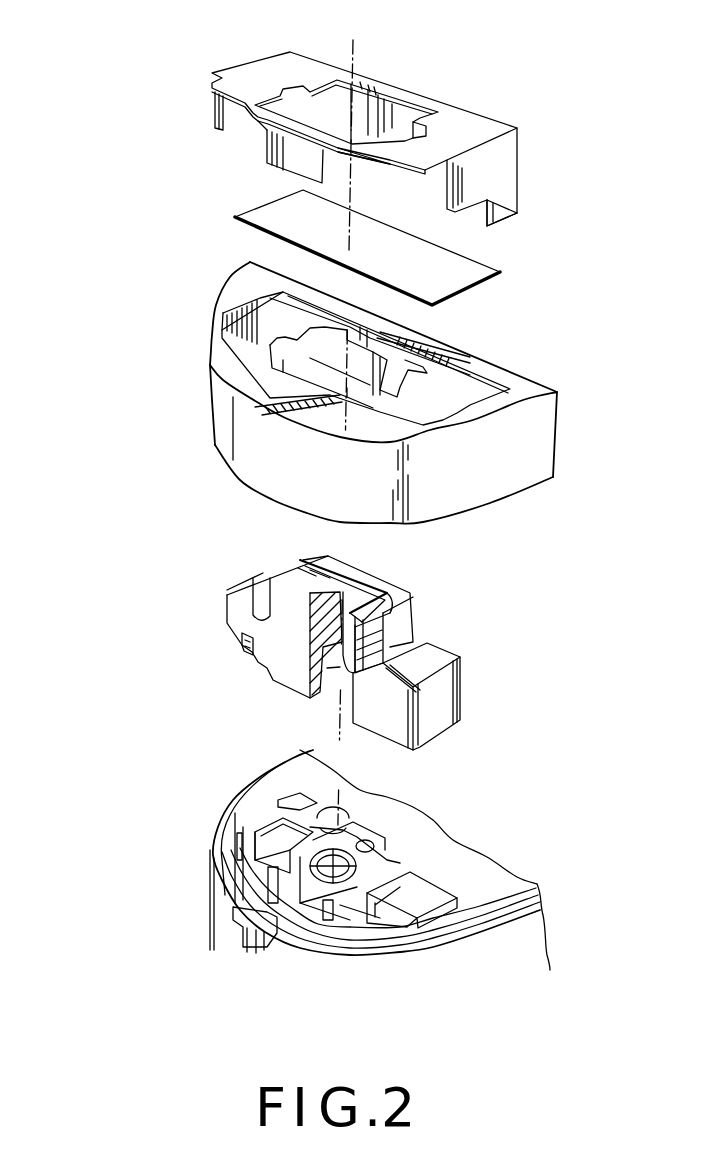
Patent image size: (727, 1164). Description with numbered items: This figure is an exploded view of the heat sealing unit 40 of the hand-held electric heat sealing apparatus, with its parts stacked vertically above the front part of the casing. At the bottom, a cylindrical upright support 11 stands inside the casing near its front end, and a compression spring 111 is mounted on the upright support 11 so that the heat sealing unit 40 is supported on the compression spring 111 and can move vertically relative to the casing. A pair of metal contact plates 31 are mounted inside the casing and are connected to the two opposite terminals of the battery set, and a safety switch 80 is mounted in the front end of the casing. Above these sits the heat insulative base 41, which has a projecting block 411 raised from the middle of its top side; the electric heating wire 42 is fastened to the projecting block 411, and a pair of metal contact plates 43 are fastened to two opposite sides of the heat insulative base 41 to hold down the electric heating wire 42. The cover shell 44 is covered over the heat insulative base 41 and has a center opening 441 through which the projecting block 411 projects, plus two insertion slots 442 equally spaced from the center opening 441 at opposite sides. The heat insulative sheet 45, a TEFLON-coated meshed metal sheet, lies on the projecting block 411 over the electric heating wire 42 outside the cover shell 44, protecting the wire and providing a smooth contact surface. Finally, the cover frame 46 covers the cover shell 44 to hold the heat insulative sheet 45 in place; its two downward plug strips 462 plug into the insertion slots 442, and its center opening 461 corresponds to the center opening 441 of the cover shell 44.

The upright support 11 is at (313, 893).
The compression spring 111 is at (347, 833).
The metal contact plates 31 is at (277, 827).
The heat sealing unit 40 is at (92, 270).
The heat insulative base 41 is at (410, 630).
The projecting block 411 is at (363, 567).
The electric heating wire 42 is at (387, 580).
The metal contact plates 43 is at (243, 641).
The cover shell 44 is at (540, 437).
The center opening 441 is at (367, 358).
The insertion slots 442 is at (260, 320).
The heat insulative sheet 45 is at (477, 277).
The cover frame 46 is at (502, 118).
The center opening 461 is at (332, 100).
The plug strips 462 is at (234, 124).
The safety switch 80 is at (250, 947).